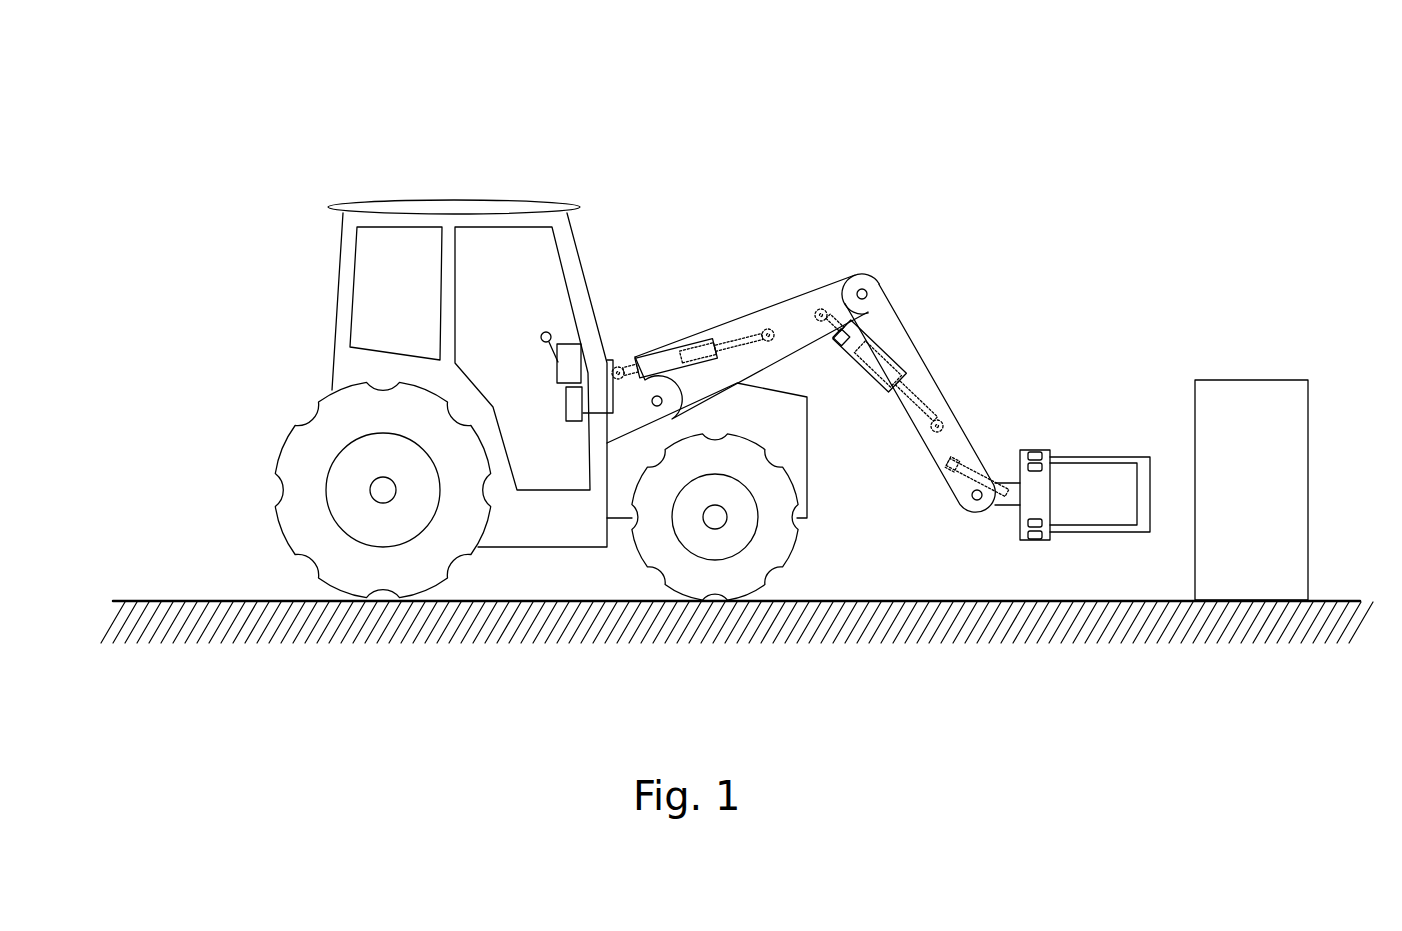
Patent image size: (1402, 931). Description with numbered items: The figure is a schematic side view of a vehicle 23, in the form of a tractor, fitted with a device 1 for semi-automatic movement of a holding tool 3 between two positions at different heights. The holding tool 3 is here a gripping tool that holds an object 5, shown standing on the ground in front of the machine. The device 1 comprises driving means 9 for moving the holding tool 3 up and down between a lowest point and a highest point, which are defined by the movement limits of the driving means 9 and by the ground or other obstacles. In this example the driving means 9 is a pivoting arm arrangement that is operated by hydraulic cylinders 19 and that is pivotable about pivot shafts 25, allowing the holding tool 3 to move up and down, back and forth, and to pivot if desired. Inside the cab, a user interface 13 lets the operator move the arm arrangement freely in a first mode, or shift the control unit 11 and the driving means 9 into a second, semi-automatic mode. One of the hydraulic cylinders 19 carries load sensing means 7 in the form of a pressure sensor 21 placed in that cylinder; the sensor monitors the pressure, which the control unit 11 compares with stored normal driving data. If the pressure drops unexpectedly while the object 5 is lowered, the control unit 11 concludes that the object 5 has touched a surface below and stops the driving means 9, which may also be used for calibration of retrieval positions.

The device 1 is at (926, 230).
The holding tool 3 is at (1140, 466).
The object 5 is at (1272, 402).
The load sensing means 7 is at (907, 358).
The driving means 9 is at (793, 295).
The control unit 11 is at (575, 407).
The user interface 13 is at (560, 370).
The hydraulic cylinders 19 is at (878, 373).
The pressure sensor 21 is at (850, 322).
The vehicle 23 is at (369, 115).
The pivot shafts 25 is at (658, 396).